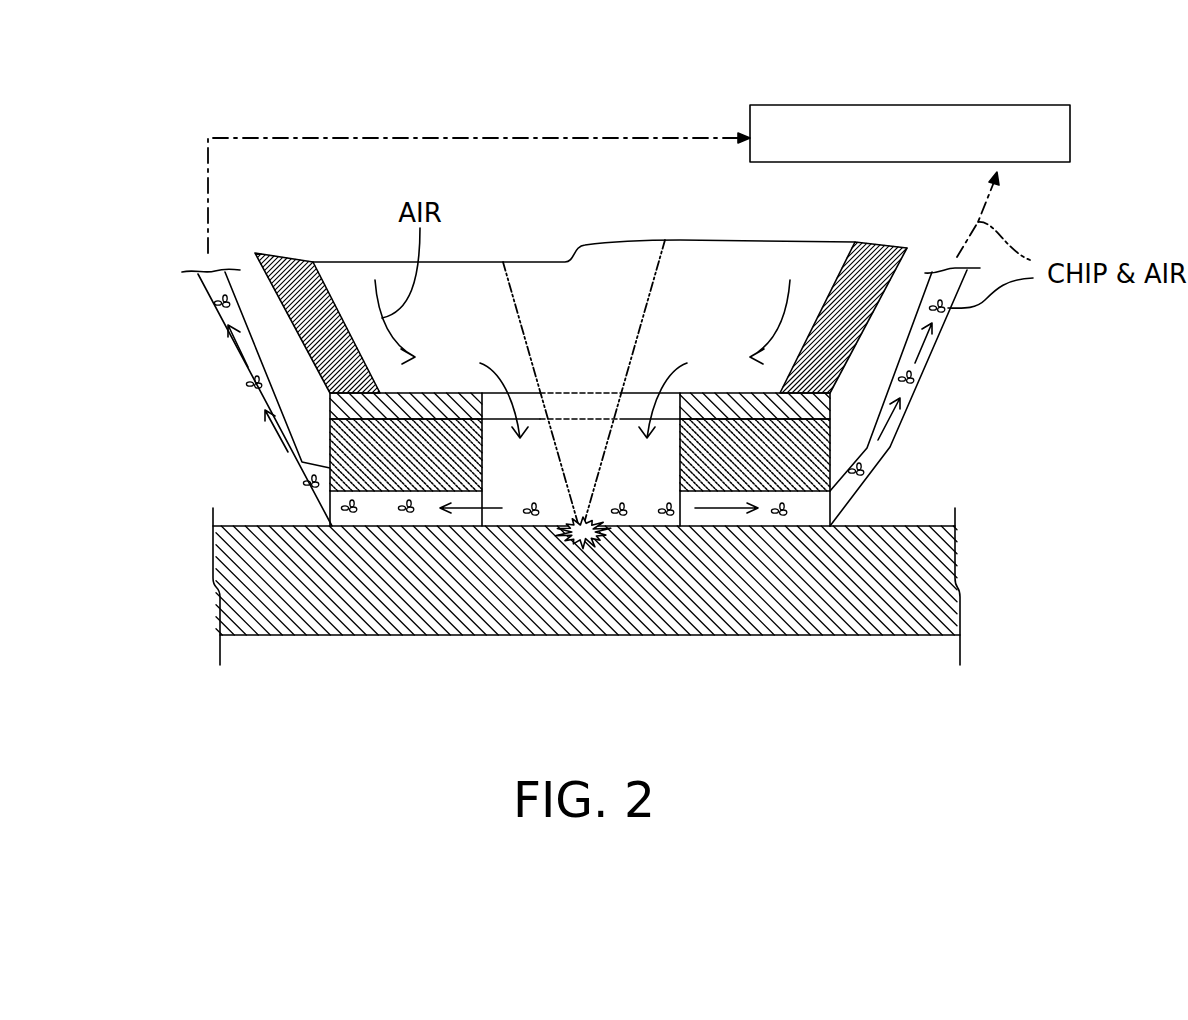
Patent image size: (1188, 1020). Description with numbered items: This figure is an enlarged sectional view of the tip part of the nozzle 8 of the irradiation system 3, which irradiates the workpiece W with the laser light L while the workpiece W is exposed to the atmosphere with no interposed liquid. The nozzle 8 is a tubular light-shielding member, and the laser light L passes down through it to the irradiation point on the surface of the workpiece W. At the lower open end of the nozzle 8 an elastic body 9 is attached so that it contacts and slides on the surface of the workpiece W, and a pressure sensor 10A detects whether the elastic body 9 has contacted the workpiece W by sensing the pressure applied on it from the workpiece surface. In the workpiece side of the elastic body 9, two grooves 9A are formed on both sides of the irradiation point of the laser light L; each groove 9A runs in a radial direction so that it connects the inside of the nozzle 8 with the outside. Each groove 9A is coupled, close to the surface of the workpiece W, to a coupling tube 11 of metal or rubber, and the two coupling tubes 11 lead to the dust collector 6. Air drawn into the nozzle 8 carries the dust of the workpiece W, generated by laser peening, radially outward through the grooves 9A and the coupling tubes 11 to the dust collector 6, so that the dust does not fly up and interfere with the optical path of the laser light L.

The irradiation system 3 is at (366, 251).
The dust collector 6 is at (1098, 162).
The nozzle 8 is at (293, 330).
The elastic body 9 is at (330, 467).
The groove 9A is at (428, 527).
The pressure sensor 10A is at (330, 412).
The coupling tube 11 is at (902, 427).
The laser light L is at (652, 290).
The workpiece W is at (708, 637).